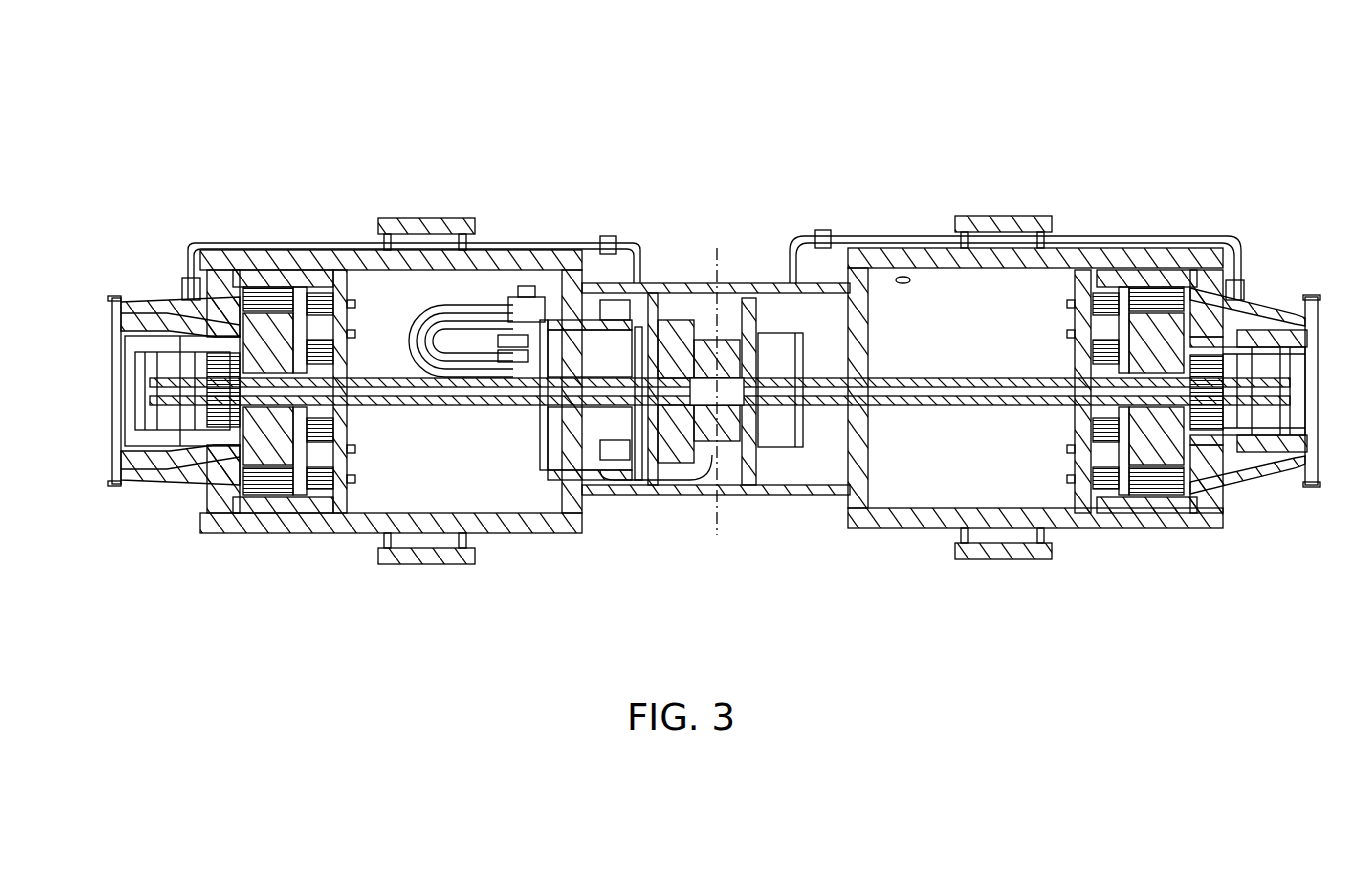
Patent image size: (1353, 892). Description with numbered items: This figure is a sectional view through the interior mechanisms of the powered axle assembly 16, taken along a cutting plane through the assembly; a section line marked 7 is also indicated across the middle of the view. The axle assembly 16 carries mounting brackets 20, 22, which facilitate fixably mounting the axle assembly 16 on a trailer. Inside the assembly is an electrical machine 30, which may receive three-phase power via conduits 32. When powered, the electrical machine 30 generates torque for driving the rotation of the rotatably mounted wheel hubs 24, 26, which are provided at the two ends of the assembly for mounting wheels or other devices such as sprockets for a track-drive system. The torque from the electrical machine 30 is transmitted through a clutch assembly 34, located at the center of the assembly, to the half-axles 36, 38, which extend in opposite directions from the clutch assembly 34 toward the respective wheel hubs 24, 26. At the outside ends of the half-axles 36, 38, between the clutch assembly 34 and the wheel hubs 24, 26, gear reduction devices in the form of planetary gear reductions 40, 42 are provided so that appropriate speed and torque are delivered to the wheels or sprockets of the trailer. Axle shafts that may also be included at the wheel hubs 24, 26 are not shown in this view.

The powered axle assembly 16 is at (572, 70).
The mounting bracket 20 is at (433, 215).
The mounting bracket 22 is at (982, 215).
The wheel hub 24 is at (140, 298).
The wheel hub 26 is at (1277, 290).
The electrical machine 30 is at (587, 430).
The conduits 32 is at (493, 300).
The clutch assembly 34 is at (703, 335).
The half-axle 36 is at (433, 405).
The half-axle 38 is at (967, 402).
The planetary gear reduction 40 is at (318, 250).
The planetary gear reduction 42 is at (1108, 287).
The section line 7- 7 is at (734, 389).